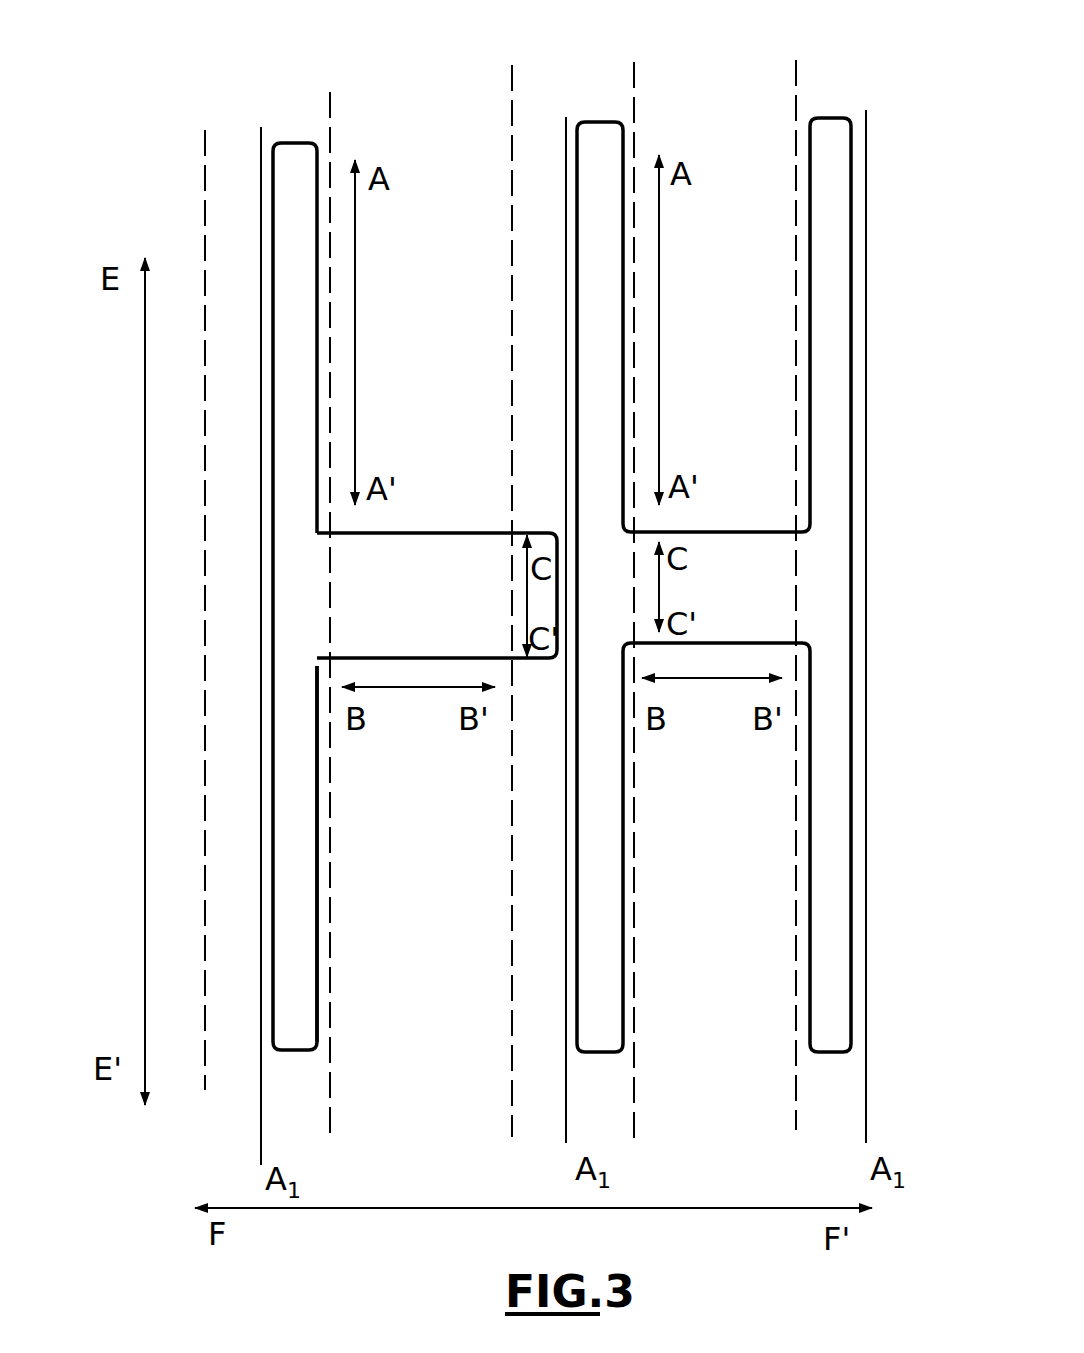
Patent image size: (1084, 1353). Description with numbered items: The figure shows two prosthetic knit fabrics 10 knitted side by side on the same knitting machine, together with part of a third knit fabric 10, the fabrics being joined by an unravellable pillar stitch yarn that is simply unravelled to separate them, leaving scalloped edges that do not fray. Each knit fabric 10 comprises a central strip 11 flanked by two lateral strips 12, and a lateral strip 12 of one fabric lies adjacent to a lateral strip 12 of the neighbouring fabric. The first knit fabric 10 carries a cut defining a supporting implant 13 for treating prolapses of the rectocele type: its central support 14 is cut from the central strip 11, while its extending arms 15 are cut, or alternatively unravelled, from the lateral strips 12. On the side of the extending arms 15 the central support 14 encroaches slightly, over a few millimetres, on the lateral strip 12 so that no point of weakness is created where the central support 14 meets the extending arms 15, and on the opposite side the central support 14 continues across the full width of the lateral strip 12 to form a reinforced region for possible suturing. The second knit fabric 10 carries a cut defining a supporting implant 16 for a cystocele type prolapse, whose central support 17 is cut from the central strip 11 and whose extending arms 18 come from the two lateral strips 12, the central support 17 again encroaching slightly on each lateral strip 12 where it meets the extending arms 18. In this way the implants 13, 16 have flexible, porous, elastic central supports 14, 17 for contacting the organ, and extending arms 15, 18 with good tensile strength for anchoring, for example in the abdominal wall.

The prosthetic knit fabric 10 is at (175, 155).
The central strip 11 is at (175, 270).
The lateral strip 12 is at (232, 182).
The supporting implant 13 is at (322, 940).
The central support 14 is at (432, 577).
The extending arm 15 is at (292, 217).
The supporting implant 16 is at (750, 558).
The central support 17 is at (730, 567).
The extending arm 18 is at (597, 162).